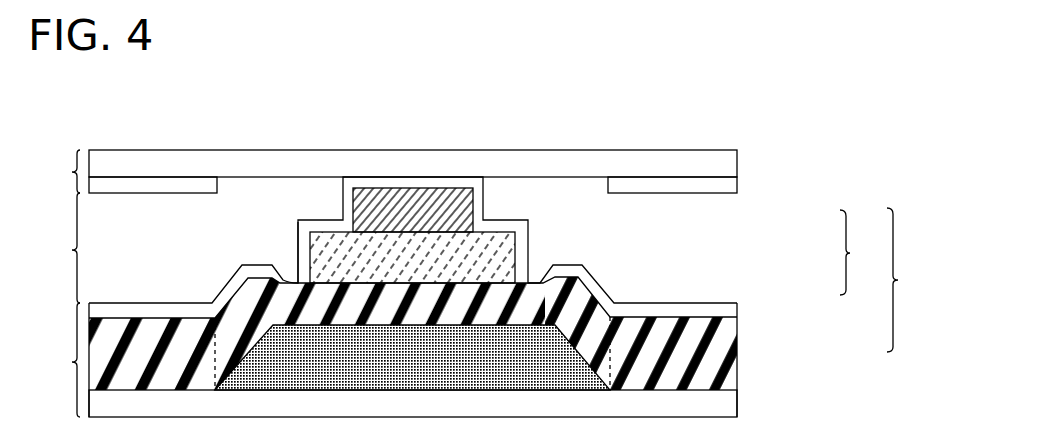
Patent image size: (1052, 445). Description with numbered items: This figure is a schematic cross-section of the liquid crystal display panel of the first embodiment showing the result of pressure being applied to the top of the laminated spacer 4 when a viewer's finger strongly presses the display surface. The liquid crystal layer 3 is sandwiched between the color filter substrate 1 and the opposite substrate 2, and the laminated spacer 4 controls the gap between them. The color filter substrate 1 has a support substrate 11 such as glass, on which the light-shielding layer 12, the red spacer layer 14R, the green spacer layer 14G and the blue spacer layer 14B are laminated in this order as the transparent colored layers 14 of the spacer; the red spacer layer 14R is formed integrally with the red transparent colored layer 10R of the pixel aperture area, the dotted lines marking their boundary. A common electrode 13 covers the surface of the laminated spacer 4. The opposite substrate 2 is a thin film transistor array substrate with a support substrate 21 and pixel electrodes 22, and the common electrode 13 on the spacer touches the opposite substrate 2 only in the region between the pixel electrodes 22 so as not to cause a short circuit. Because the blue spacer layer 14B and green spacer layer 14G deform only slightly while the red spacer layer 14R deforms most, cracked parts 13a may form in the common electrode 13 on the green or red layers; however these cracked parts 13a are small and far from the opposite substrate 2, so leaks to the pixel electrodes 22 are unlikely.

The color filter substrate 1 is at (66, 360).
The opposite substrate 2 is at (65, 171).
The liquid crystal layer 3 is at (65, 248).
The laminated spacer 4 is at (903, 280).
The red transparent colored layer in the pixel aperture area 10R is at (710, 369).
The support substrate 11 is at (733, 408).
The light-shielding layer 12 is at (555, 380).
The common electrode 13 is at (328, 224).
The cracked part 13a is at (297, 221).
The transparent colored layers 14 is at (864, 252).
The blue spacer layer 14B is at (473, 202).
The green spacer layer 14G is at (515, 247).
The red spacer layer 14R is at (523, 297).
The support substrate 21 is at (727, 163).
The pixel electrodes 22 is at (733, 183).